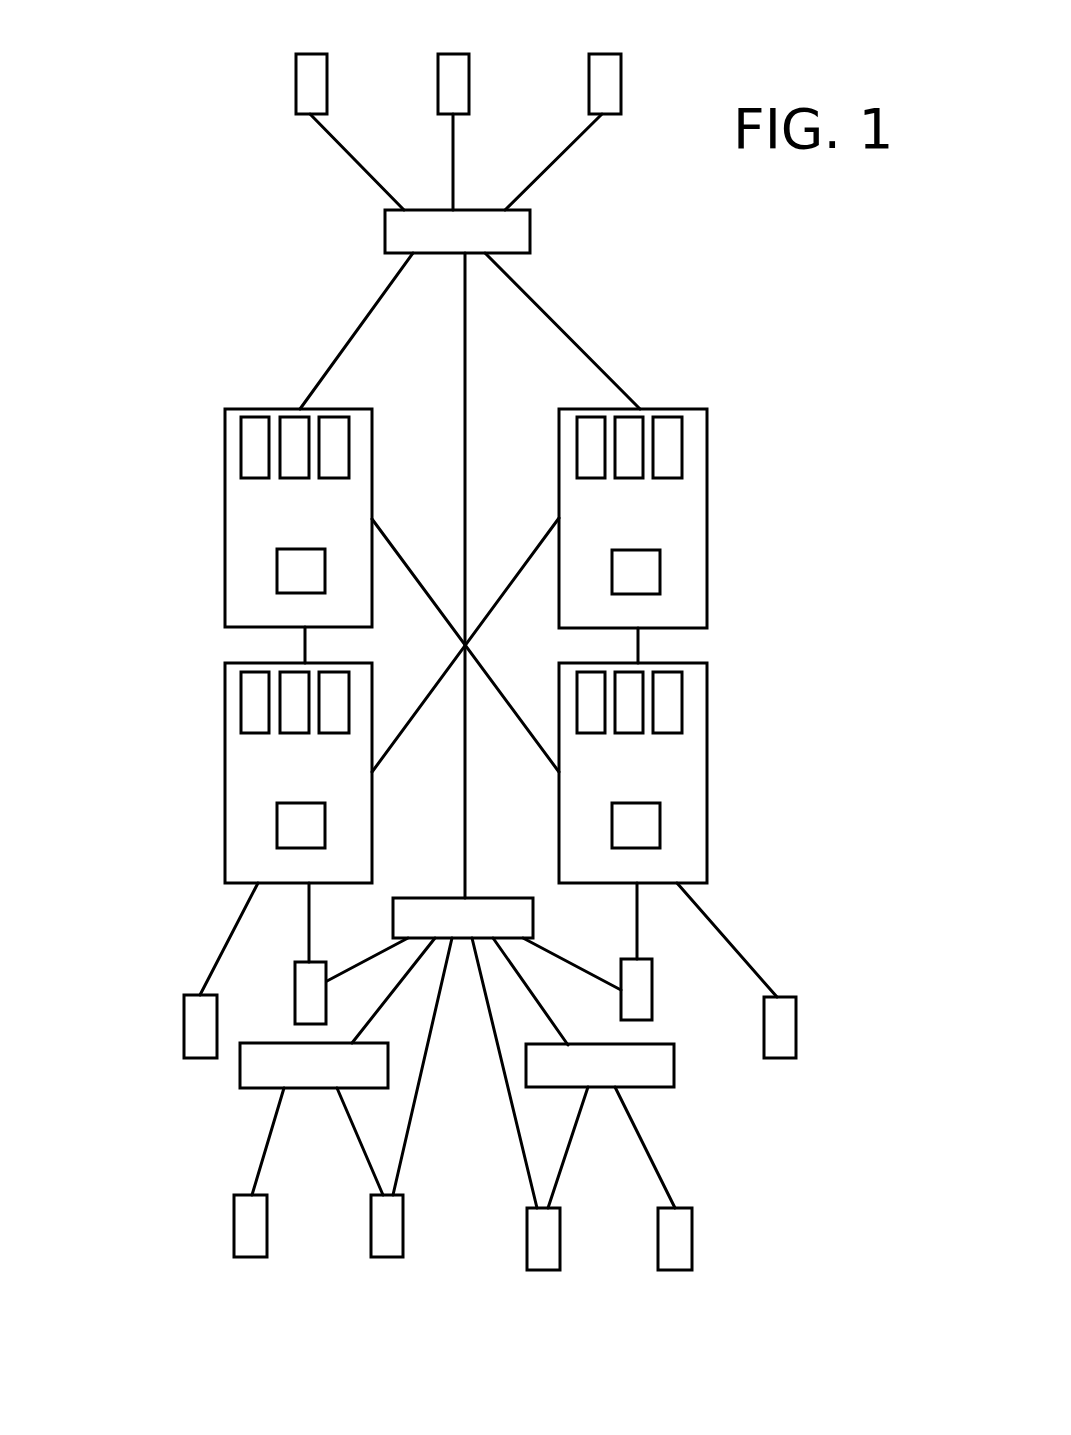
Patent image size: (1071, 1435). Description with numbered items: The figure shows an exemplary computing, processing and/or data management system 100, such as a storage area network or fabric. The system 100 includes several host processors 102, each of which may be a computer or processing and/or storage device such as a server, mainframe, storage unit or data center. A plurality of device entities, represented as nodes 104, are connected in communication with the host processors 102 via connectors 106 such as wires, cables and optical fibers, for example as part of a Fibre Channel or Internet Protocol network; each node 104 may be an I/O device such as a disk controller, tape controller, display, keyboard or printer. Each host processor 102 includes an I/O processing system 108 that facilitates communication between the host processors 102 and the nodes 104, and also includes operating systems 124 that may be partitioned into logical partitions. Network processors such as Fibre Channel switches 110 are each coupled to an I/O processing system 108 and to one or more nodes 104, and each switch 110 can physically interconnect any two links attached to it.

The computing, processing and/or data management system 100 is at (128, 90).
The host processor 102 is at (225, 453).
The node 104 is at (294, 74).
The connector 106 is at (358, 322).
The I/O processing system 108 is at (302, 572).
The switch 110 is at (530, 228).
The operating system 124 is at (257, 442).